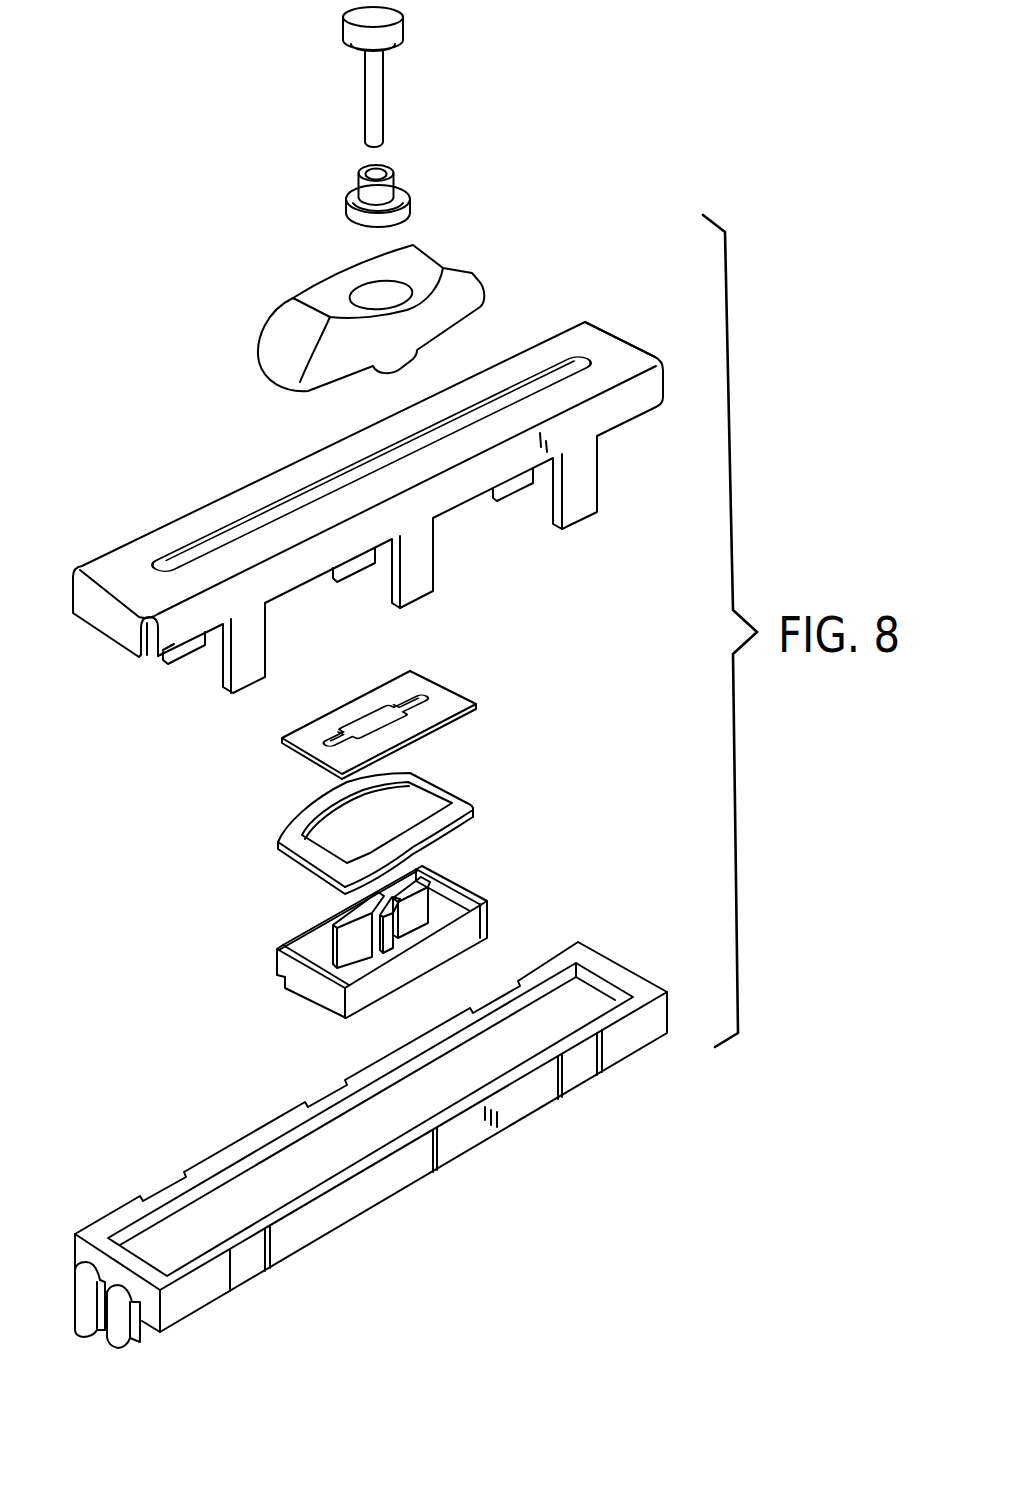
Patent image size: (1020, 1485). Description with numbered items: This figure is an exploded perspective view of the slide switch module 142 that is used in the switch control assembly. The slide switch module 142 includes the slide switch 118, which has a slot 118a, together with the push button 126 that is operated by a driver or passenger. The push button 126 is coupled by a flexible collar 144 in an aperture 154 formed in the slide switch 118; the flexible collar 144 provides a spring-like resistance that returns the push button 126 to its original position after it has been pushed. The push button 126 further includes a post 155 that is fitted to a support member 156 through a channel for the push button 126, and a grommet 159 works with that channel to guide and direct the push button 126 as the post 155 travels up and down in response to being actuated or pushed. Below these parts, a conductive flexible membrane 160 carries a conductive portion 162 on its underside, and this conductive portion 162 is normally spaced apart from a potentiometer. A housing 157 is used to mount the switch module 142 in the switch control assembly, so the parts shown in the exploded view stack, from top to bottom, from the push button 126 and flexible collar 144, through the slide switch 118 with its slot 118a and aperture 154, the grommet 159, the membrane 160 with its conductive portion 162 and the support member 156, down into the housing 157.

The slide switch 118 is at (371, 464).
The slot 118a is at (572, 364).
The push button 126 is at (405, 24).
The slide switch module 142 is at (599, 135).
The flexible collar 144 is at (410, 193).
The aperture 154 is at (432, 257).
The post 155 is at (387, 118).
The support member 156 is at (488, 901).
The housing 157 is at (620, 1047).
The grommet 159 is at (440, 682).
The conductive flexible membrane 160 is at (400, 814).
The conductive portion 162 is at (438, 832).